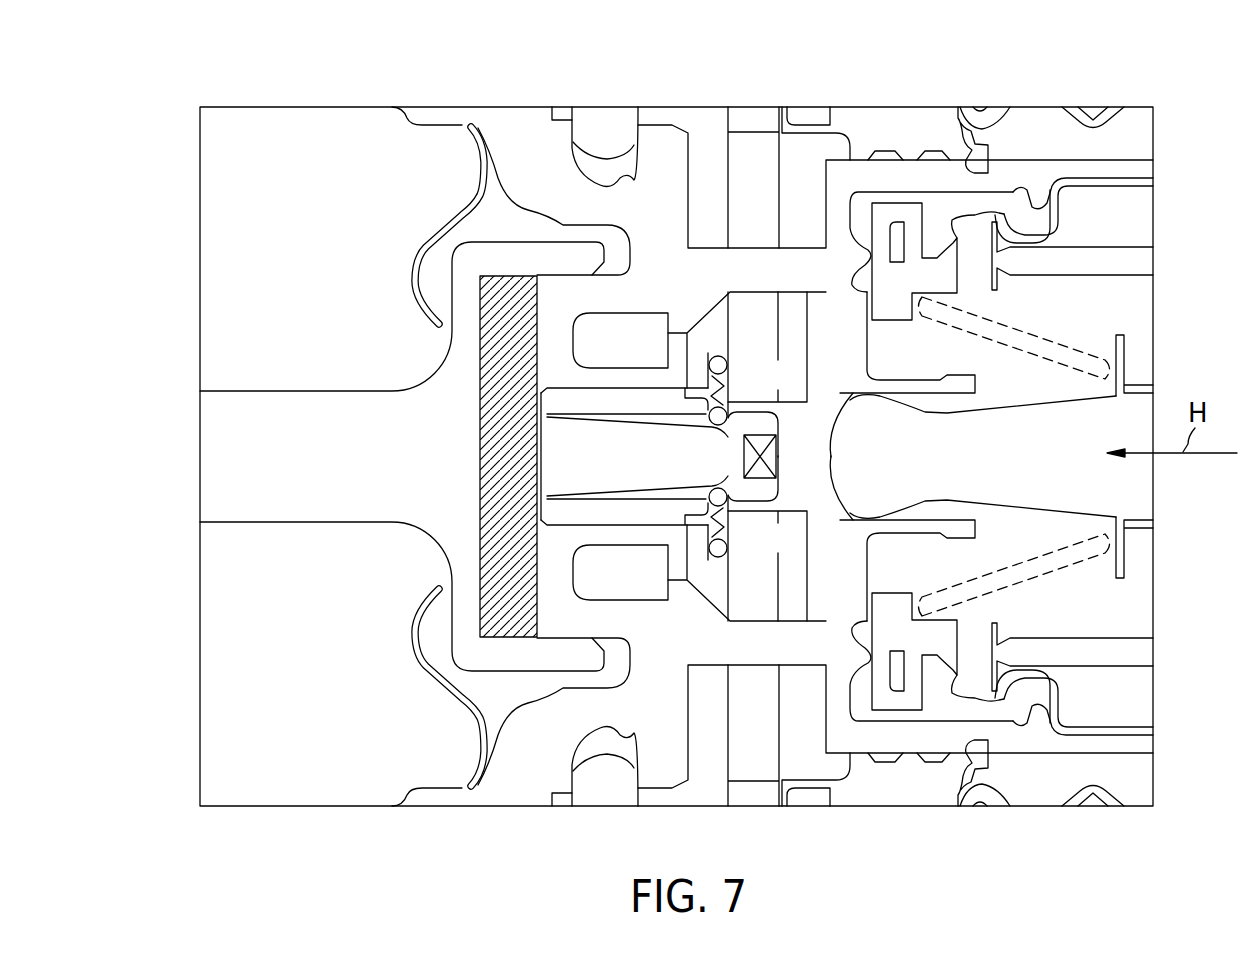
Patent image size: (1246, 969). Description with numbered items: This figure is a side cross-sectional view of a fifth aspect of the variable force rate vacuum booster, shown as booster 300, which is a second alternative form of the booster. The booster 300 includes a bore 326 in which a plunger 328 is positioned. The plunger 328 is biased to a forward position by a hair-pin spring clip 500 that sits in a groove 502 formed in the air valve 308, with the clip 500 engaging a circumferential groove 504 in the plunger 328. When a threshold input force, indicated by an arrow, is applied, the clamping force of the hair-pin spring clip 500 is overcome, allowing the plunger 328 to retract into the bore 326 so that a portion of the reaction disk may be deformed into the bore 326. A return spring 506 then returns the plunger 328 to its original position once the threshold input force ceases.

The booster 300 is at (927, 88).
The air valve 308 is at (840, 362).
The bore 326 is at (585, 498).
The plunger 328 is at (603, 428).
The hair-pin spring clip 500 is at (717, 356).
The groove 502 is at (730, 389).
The circumferential groove 504 is at (728, 424).
The return spring 506 is at (777, 457).